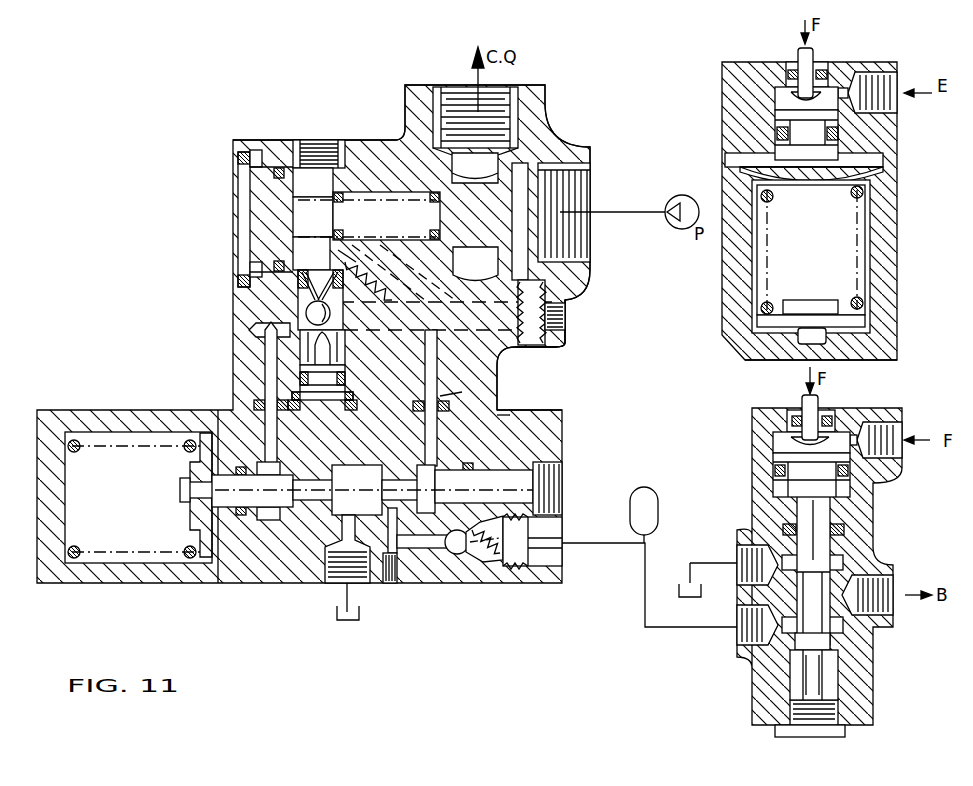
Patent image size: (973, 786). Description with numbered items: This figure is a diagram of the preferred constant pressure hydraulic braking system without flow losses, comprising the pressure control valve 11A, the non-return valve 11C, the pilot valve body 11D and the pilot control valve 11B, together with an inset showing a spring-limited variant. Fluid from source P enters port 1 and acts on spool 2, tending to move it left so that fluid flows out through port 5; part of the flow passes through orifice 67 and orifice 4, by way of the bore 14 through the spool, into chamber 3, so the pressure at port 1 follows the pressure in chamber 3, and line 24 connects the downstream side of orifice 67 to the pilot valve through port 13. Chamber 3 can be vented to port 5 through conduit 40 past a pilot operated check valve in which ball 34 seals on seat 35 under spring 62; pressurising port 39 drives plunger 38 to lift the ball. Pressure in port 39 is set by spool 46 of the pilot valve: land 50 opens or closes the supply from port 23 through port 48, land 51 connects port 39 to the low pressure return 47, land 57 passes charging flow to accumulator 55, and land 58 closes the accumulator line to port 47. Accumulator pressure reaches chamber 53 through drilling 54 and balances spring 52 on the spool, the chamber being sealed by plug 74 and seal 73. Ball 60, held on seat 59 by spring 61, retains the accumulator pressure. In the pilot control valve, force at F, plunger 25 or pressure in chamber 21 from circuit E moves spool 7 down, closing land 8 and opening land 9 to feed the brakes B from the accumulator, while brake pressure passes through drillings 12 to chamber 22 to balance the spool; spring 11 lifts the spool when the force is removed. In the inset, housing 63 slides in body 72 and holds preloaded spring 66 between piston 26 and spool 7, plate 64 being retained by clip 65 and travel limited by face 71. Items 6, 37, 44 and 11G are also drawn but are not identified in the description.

The port 1 is at (578, 160).
The spool 2 is at (546, 153).
The chamber 3 is at (316, 232).
The orifice 4 is at (362, 268).
The port 5 is at (507, 110).
The closure plug 6 is at (311, 196).
The spool 7 is at (816, 517).
The land 8 is at (811, 572).
The land 9 is at (828, 629).
The spring 11 is at (836, 673).
The pressure control valve 11A is at (549, 346).
The pilot control valve 11B is at (873, 701).
The non-return valve 11C is at (489, 560).
The pilot valve body 11D is at (548, 412).
The housing portion 11G is at (893, 229).
The drillings 12 is at (776, 640).
The port 13 is at (450, 440).
The bore 14 is at (378, 284).
The chamber 21 is at (784, 86).
The chamber 22 is at (805, 683).
The port 23 is at (268, 446).
The line 24 is at (440, 340).
The plunger 25 is at (814, 53).
The piston 26 is at (790, 148).
The ball 34 is at (306, 310).
The seat 35 is at (298, 337).
The inclined passage 37 is at (375, 292).
The plunger and piston 38 is at (300, 378).
The port 39 is at (292, 395).
The conduit 40 is at (420, 298).
The lower housing 44 is at (268, 565).
The spool 46 is at (273, 501).
The low pressure return 47 is at (332, 578).
The port 48 is at (256, 416).
The land 50 is at (205, 500).
The land 51 is at (367, 498).
The spring 52 is at (90, 550).
The chamber 53 is at (530, 412).
The drilling 54 is at (548, 536).
The accumulator 55 is at (650, 512).
The land 57 is at (475, 488).
The land 58 is at (455, 400).
The seat 59 is at (447, 548).
The ball 60 is at (460, 556).
The spring 61 is at (486, 562).
The spring 62 is at (311, 253).
The housing 63 is at (868, 171).
The plate 64 is at (872, 317).
The clip 65 is at (883, 331).
The spring 66 is at (770, 267).
The orifice 67 is at (557, 308).
The face 71 is at (745, 356).
The body 72 is at (740, 97).
The seal 73 is at (505, 414).
The plug 74 is at (553, 492).